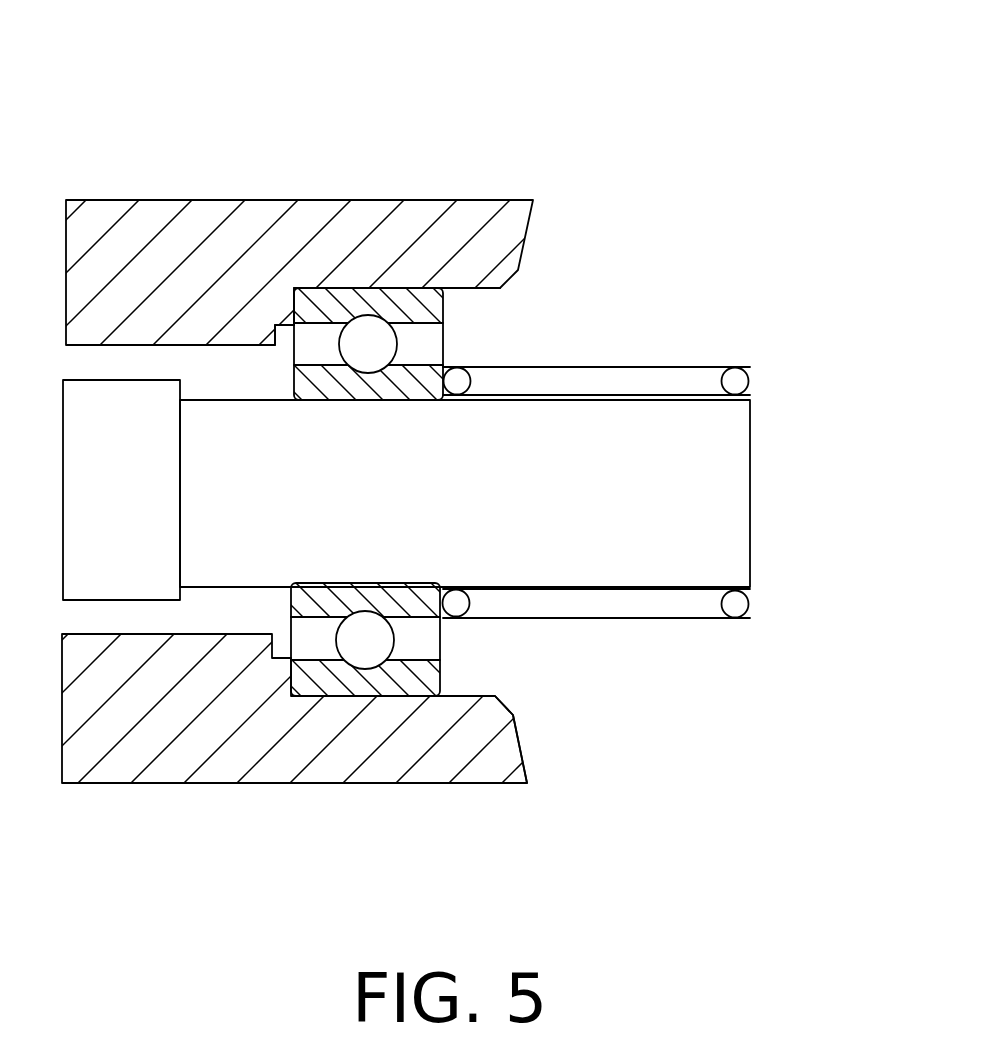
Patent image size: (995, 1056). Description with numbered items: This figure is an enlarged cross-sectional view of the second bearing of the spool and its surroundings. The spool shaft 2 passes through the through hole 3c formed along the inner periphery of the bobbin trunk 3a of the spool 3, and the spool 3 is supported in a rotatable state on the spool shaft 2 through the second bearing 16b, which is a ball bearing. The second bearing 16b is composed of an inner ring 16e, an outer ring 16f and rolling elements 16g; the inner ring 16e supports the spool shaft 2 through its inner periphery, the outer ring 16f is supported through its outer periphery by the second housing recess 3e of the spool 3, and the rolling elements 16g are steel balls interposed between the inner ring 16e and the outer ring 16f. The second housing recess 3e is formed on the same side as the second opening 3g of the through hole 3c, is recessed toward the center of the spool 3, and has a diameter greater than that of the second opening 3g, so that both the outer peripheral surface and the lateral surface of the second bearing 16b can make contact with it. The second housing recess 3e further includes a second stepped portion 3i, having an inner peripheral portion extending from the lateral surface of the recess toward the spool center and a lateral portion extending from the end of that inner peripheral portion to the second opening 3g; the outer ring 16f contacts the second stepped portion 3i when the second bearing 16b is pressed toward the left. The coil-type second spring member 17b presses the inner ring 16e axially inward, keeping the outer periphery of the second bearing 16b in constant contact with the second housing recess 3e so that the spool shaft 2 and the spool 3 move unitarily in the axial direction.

The spool shaft 2 is at (738, 467).
The spool 3 is at (327, 439).
The bobbin trunk 3a is at (152, 220).
The through hole 3c is at (147, 622).
The second housing recess 3e is at (322, 300).
The second opening 3g is at (285, 340).
The second stepped portion 3i is at (290, 678).
The second bearing 16b is at (367, 346).
The inner ring 16e is at (423, 602).
The outer ring 16f is at (428, 680).
The rolling elements 16g is at (365, 640).
The second spring member 17b is at (622, 385).